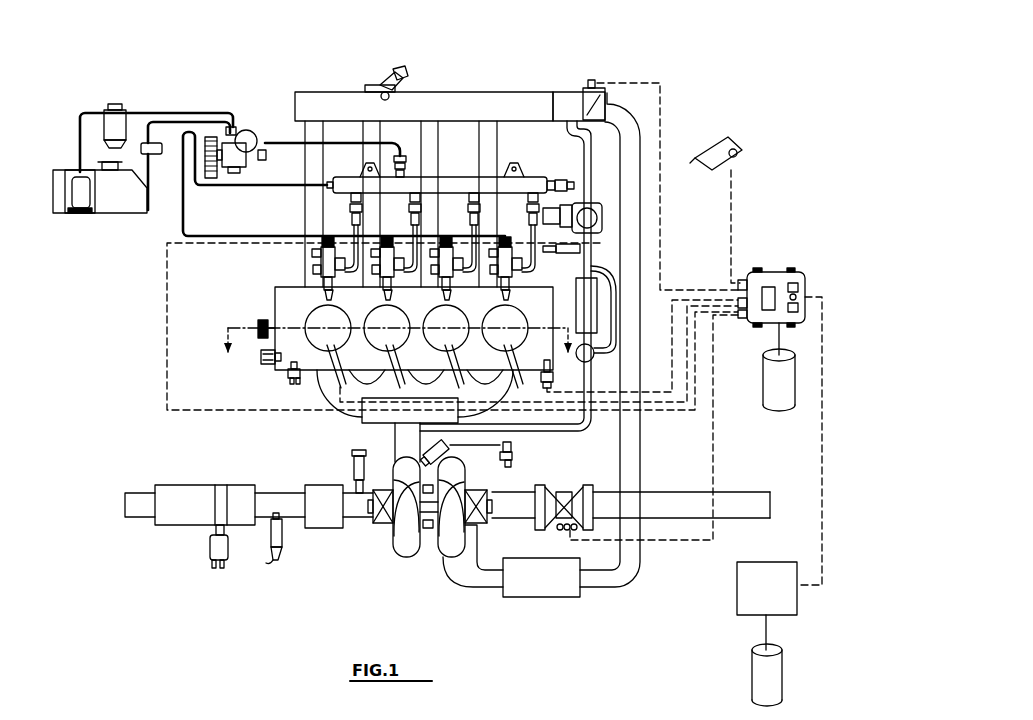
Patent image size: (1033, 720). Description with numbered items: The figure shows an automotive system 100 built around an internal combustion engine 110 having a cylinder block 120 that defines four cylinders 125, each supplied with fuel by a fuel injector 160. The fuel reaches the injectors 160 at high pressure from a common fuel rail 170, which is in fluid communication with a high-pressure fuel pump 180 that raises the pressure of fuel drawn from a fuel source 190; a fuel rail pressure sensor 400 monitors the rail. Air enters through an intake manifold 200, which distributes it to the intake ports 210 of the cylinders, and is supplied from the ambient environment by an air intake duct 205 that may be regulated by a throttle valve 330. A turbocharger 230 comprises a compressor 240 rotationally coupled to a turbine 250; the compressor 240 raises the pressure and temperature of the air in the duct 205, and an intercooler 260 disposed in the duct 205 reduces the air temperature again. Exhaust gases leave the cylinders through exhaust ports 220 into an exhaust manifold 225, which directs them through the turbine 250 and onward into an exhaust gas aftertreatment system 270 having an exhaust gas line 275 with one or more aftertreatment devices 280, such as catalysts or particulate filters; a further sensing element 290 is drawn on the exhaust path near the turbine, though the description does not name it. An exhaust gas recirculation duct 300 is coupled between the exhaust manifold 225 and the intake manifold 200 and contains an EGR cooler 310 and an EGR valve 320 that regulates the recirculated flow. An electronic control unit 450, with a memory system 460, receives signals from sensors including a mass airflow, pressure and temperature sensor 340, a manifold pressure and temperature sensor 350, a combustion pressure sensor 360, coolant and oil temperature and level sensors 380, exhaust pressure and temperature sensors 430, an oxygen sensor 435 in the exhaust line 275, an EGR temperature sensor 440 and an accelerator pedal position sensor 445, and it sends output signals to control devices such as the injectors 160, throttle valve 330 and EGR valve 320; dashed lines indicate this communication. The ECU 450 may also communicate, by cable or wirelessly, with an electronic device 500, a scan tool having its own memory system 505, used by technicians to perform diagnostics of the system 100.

The automotive system 100 is at (220, 78).
The internal combustion engine 110 is at (510, 80).
The cylinder block 120 is at (275, 292).
The cylinder 125 is at (520, 313).
The fuel injector 160 is at (323, 273).
The fuel rail 170 is at (333, 188).
The high-pressure fuel pump 180 is at (250, 128).
The fuel source 190 is at (120, 203).
The intake manifold 200 is at (430, 107).
The air intake duct 205 is at (640, 468).
The intake port 210 is at (315, 288).
The exhaust port 220 is at (327, 370).
The exhaust manifold 225 is at (377, 415).
The turbocharger 230 is at (402, 563).
The compressor 240 is at (453, 530).
The turbine 250 is at (403, 528).
The intercooler 260 is at (562, 583).
The exhaust gas aftertreatment system 270 is at (190, 475).
The exhaust gas line 275 is at (138, 507).
The exhaust aftertreatment device 280 is at (177, 507).
The exhaust gas sensor 290 is at (443, 450).
The exhaust gas recirculation duct 300 is at (560, 440).
The EGR cooler 310 is at (587, 318).
The EGR valve 320 is at (592, 200).
The throttle valve 330 is at (593, 80).
The mass airflow, pressure, temperature sensor 340 is at (562, 525).
The manifold pressure and temperature sensor 350 is at (380, 82).
The combustion pressure sensor 360 is at (328, 383).
The coolant and oil temperature and level sensors 380 is at (288, 373).
The fuel rail pressure sensor 400 is at (568, 183).
The exhaust pressure and temperature sensors 430 is at (277, 558).
The oxygen sensor 435 is at (353, 483).
The EGR temperature sensor 440 is at (587, 242).
The accelerator pedal position sensor 445 is at (733, 140).
The electronic control unit 450 is at (776, 268).
The memory system 460 is at (778, 395).
The electronic device 500 is at (757, 578).
The memory system 505 is at (758, 673).